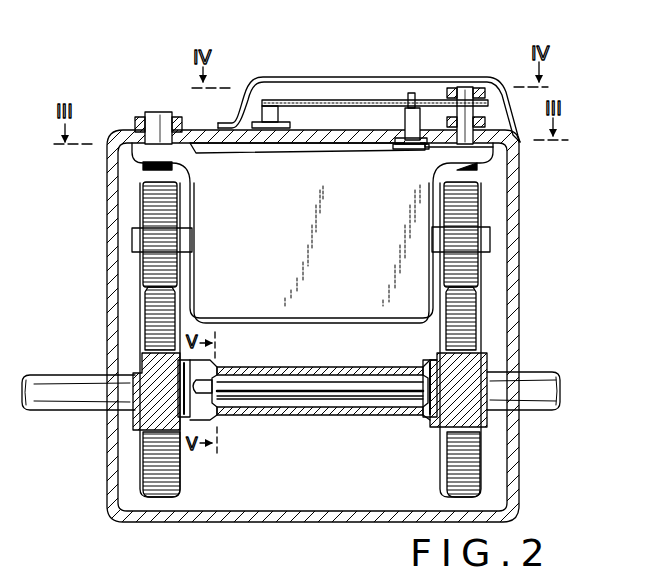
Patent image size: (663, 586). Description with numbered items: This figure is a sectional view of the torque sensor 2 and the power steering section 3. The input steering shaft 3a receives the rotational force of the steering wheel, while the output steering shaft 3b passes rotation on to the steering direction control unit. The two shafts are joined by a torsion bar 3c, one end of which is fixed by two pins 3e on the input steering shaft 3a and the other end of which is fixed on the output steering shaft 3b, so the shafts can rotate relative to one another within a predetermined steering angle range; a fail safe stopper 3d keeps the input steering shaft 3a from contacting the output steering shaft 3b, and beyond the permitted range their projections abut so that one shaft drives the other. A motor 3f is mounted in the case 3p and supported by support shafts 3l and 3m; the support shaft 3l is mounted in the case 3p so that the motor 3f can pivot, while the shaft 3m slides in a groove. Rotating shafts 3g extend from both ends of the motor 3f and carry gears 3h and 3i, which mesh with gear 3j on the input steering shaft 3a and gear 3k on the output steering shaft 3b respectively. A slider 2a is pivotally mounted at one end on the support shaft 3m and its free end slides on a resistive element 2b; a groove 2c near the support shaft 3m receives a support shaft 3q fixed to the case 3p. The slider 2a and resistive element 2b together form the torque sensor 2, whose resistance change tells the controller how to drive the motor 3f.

The torque sensor 2 is at (307, 95).
The slider 2a is at (345, 98).
The resistive element 2b is at (270, 105).
The groove 2c is at (403, 98).
The steering section 3 is at (527, 245).
The input steering shaft 3a is at (537, 376).
The output steering shaft 3b is at (63, 380).
The torsion bar 3c is at (336, 405).
The fail safe stopper 3d is at (227, 422).
The pins 3e is at (163, 353).
The motor 3f is at (213, 160).
The rotating shafts 3g is at (133, 238).
The gear 3h is at (470, 206).
The gear 3i is at (150, 200).
The gear 3j is at (470, 343).
The gear 3k is at (145, 315).
The support shaft 3l is at (160, 110).
The support shaft 3m is at (464, 90).
The case 3p is at (515, 287).
The support shaft 3q is at (415, 92).